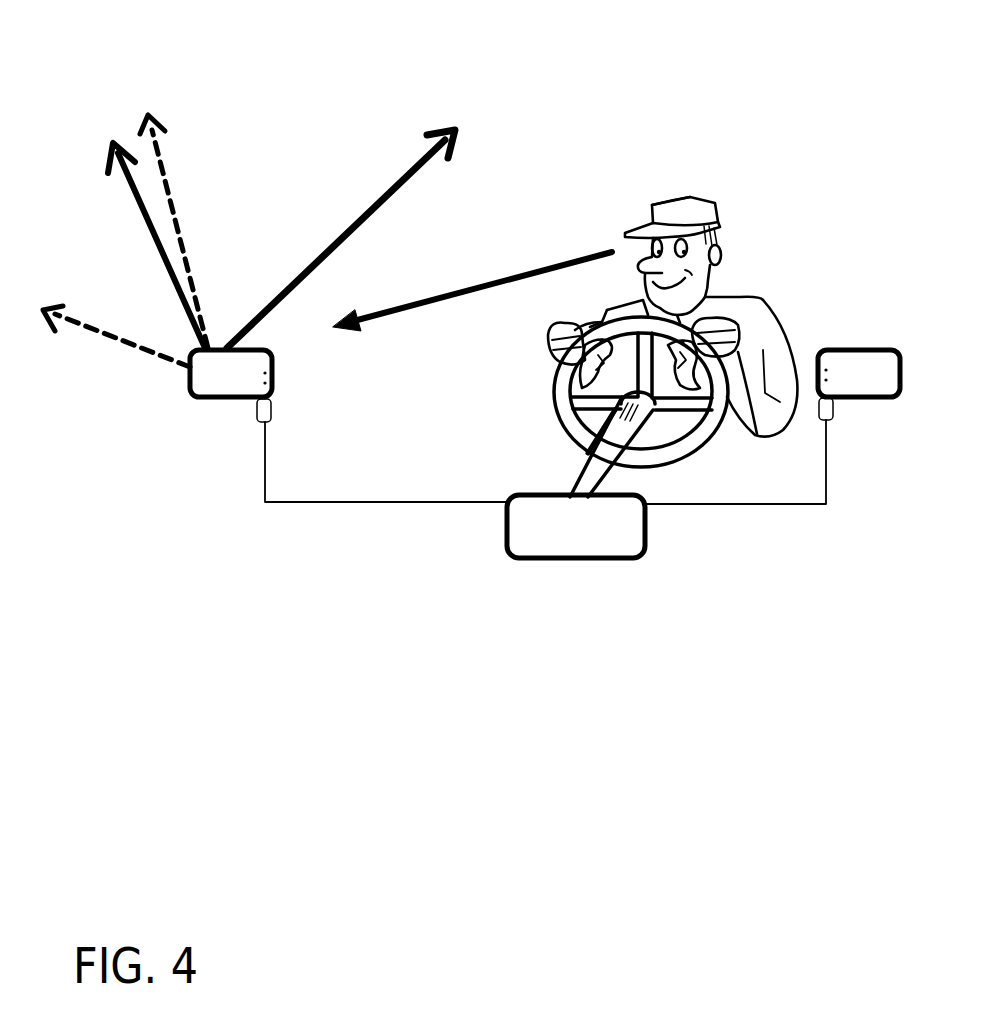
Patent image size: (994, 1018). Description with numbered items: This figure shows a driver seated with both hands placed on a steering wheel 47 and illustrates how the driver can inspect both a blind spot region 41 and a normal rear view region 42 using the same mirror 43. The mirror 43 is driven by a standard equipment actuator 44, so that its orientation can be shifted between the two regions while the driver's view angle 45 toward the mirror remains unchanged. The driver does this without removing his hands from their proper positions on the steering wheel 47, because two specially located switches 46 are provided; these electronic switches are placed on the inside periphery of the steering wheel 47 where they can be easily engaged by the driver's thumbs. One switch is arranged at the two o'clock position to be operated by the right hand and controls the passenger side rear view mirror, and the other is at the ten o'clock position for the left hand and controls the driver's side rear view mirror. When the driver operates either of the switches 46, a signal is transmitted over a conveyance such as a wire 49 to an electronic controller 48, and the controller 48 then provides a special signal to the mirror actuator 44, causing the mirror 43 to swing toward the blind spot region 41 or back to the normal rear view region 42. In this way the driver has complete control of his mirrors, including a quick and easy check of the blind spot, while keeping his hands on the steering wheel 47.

The blind spot region 41 is at (98, 238).
The normal rear view region 42 is at (238, 157).
The mirror 43 is at (192, 387).
The actuator 44 is at (259, 417).
The driver's view angle 45 is at (427, 300).
The switches 46 is at (602, 341).
The steering wheel 47 is at (548, 398).
The electronic controller 48 is at (647, 540).
The wire 49 is at (462, 503).